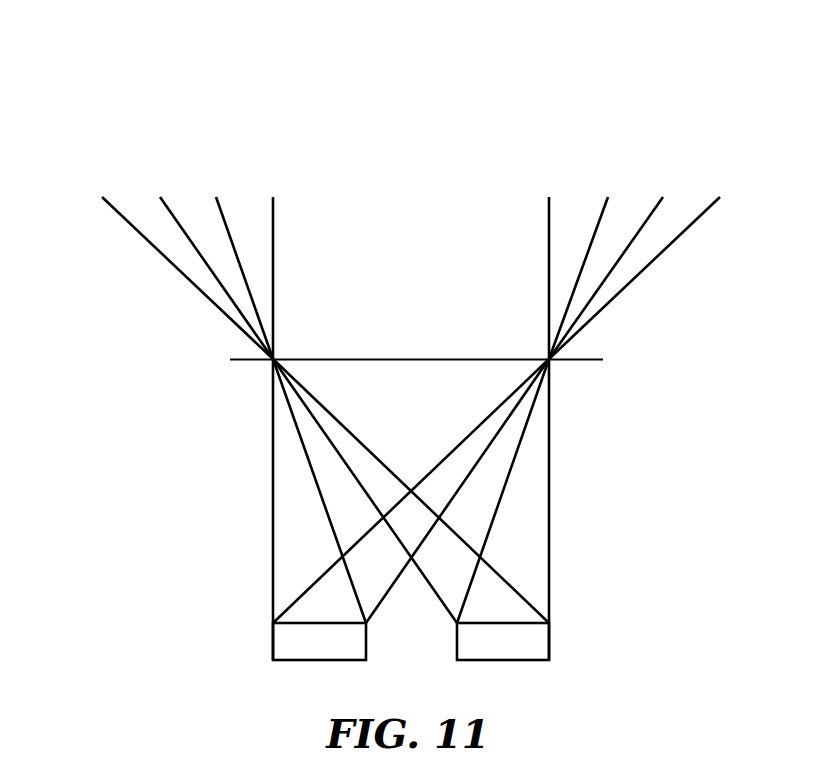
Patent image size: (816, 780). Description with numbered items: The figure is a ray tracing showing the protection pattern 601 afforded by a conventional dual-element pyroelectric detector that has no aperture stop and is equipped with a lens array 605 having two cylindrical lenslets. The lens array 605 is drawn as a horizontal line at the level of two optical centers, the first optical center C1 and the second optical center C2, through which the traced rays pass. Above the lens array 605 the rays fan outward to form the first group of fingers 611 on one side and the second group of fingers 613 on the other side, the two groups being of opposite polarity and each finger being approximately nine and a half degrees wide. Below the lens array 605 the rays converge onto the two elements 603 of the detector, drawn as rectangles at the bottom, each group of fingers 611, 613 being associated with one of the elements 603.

The protection pattern 601 is at (140, 50).
The elements 603 is at (273, 660).
The lens array 605 is at (247, 360).
The first group of fingers 611 is at (183, 148).
The second group of fingers 613 is at (638, 148).
The first optical center C1 is at (290, 344).
The second optical center C2 is at (532, 346).